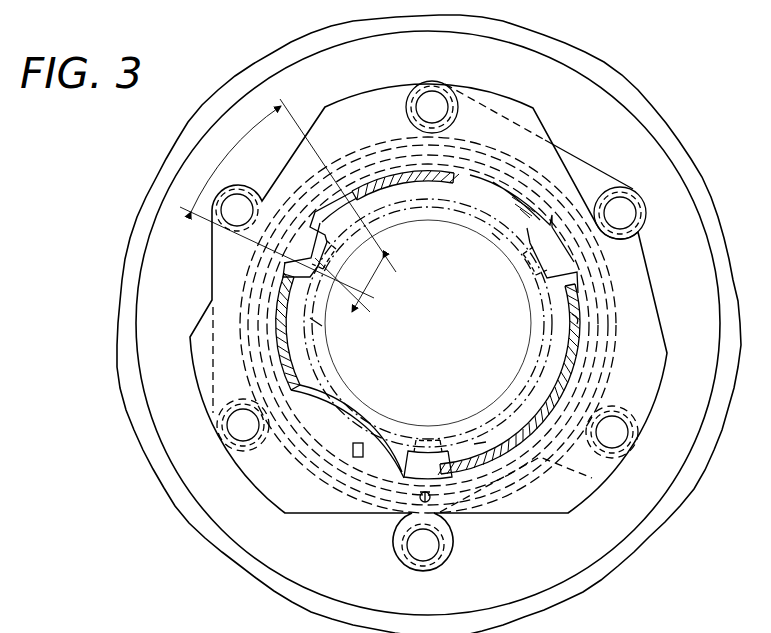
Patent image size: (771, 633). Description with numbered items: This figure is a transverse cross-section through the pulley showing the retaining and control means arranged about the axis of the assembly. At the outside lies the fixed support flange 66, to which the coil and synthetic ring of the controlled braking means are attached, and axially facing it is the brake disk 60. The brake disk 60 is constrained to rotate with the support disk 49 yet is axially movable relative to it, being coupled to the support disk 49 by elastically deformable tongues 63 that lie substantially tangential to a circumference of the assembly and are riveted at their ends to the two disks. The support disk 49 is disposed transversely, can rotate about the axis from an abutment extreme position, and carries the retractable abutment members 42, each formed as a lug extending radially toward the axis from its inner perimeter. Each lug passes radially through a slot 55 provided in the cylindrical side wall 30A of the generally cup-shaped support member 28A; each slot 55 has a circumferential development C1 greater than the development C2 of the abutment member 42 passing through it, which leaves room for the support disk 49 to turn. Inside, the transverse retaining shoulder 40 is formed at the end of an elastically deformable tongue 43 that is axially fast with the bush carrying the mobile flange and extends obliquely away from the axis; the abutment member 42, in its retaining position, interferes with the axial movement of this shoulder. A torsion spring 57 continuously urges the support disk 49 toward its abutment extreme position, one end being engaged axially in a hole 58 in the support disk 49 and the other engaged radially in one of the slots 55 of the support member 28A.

The fixed support flange 66 is at (708, 162).
The brake disk 60 is at (650, 126).
The support disk 49 is at (383, 83).
The elastically deformable tongues 63 is at (588, 180).
The cylindrical side wall 30A is at (457, 178).
The support member 28A is at (383, 170).
The slot 55 is at (363, 199).
The retractable abutment member 42 is at (315, 258).
The transverse retaining shoulder 40 is at (313, 288).
The elastically deformable tongue 43 is at (318, 320).
The torsion spring 57 is at (431, 500).
The hole 58 is at (419, 497).
The circumferential development of the slot C1 is at (288, 198).
The circumferential development of the abutment member C2 is at (355, 285).